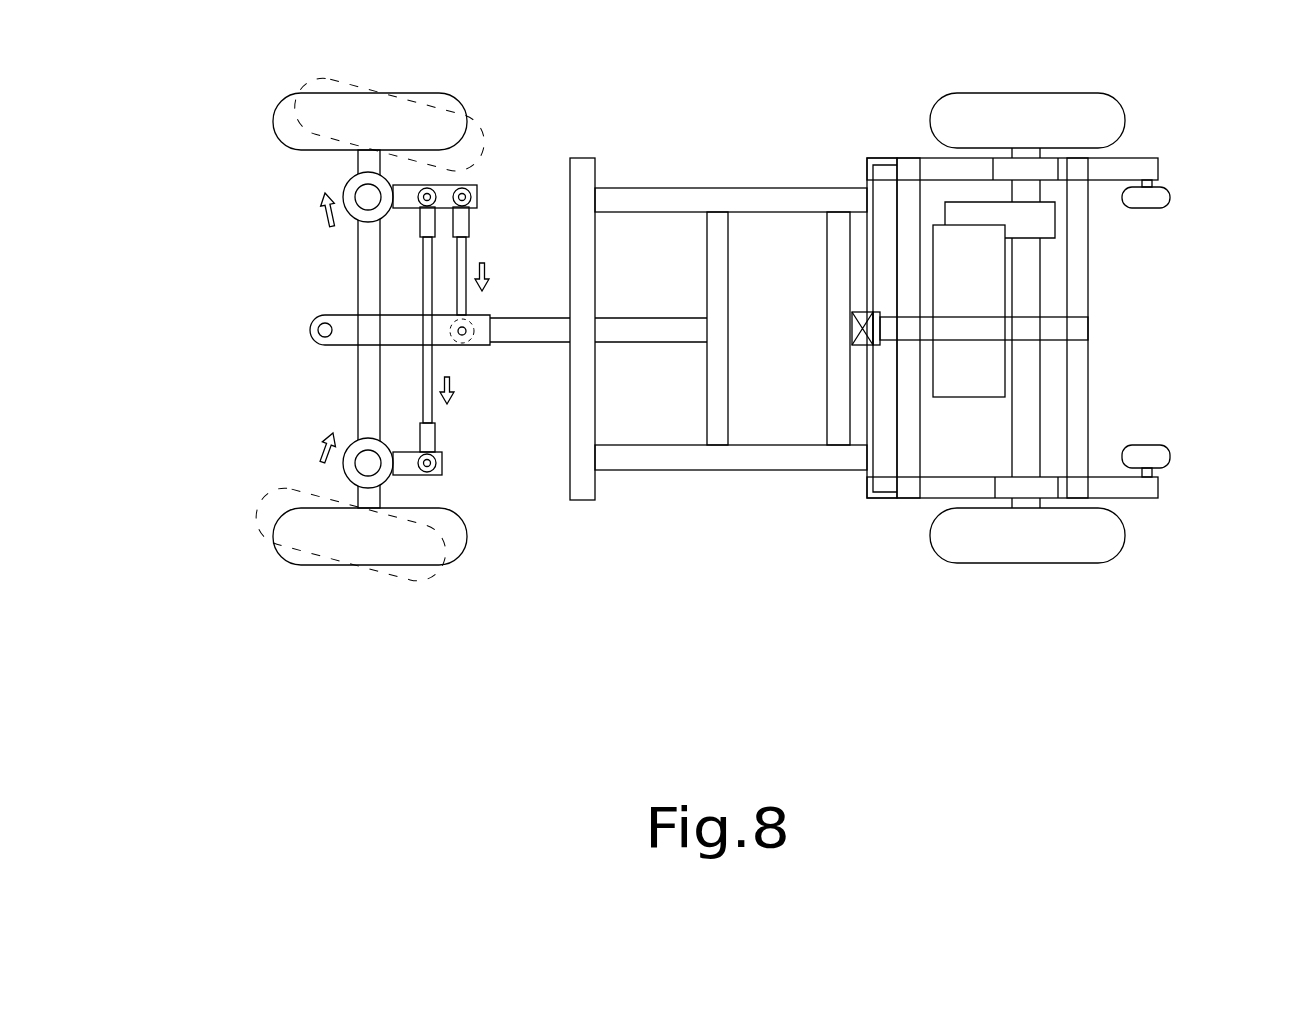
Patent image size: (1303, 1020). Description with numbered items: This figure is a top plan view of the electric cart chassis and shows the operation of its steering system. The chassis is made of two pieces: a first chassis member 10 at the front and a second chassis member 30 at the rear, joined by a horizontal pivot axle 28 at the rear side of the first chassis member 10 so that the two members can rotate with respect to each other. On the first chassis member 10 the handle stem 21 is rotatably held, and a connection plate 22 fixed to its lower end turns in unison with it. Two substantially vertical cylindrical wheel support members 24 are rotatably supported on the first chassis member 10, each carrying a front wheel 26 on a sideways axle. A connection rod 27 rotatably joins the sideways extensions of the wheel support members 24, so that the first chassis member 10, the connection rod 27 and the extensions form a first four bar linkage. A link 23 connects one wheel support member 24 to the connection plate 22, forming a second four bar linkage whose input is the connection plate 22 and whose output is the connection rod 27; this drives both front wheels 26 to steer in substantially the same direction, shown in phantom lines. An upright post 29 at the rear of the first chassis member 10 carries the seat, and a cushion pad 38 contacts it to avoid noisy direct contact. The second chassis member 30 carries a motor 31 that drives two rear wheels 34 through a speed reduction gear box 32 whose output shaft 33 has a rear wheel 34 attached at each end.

The first chassis member 10 is at (687, 197).
The handle stem 21 is at (311, 325).
The connection plate 22 is at (486, 338).
The link 23 is at (460, 252).
The wheel support member 24 is at (350, 190).
The front wheel 26 is at (442, 108).
The connection rod 27 is at (425, 252).
The pivot axle 28 is at (887, 180).
The upright post 29 is at (862, 338).
The second chassis member 30 is at (1082, 240).
The motor 31 is at (985, 280).
The speed reduction gear box 32 is at (1038, 215).
The output shaft 33 is at (947, 325).
The rear wheel 34 is at (1100, 108).
The cushion pad 38 is at (876, 335).